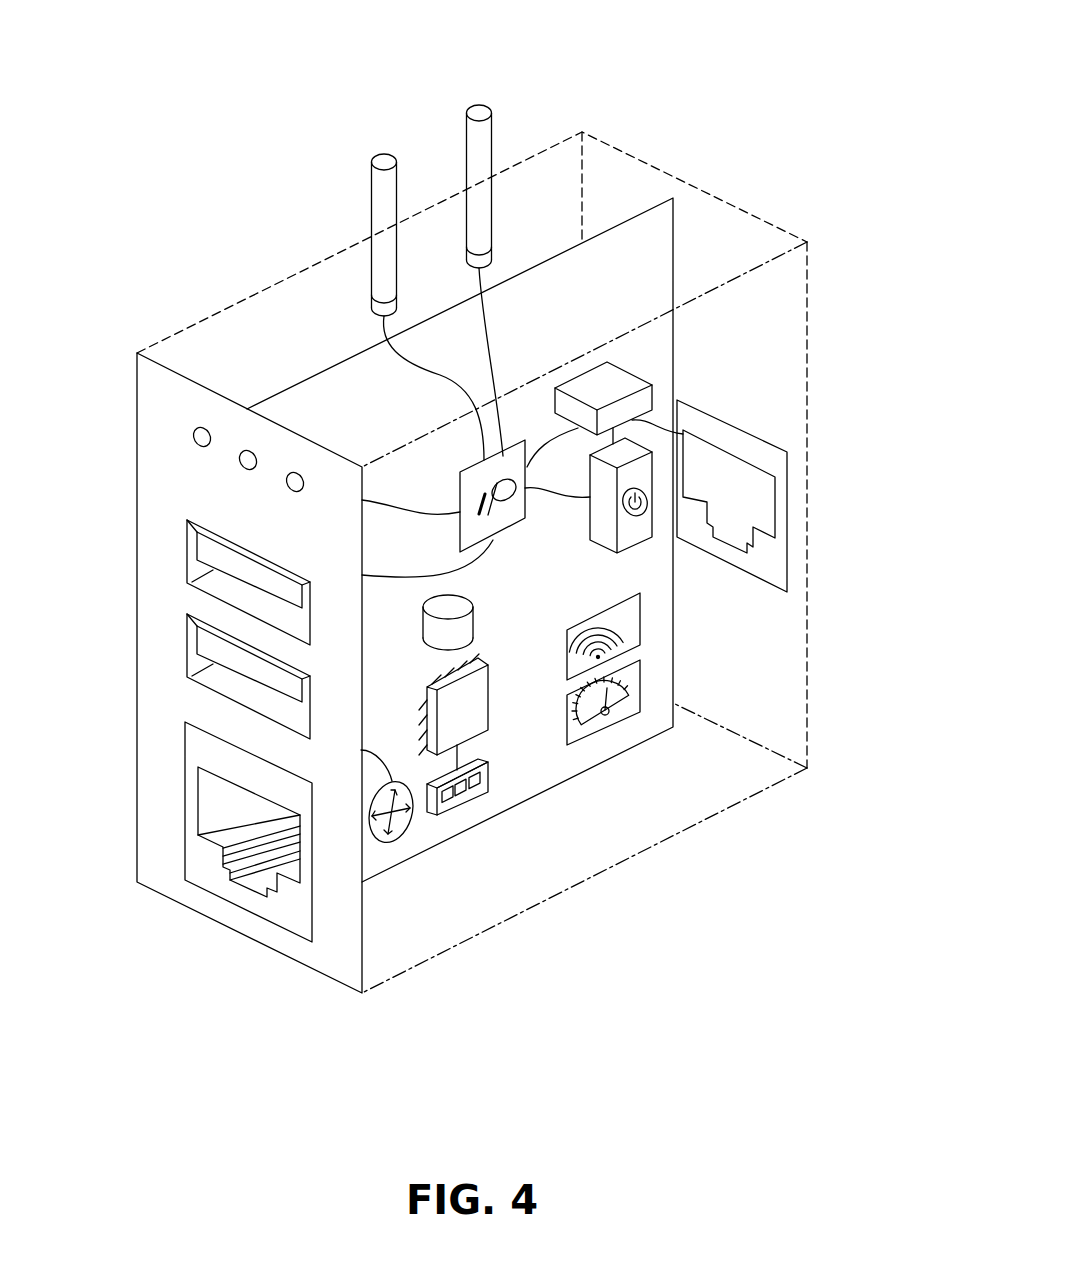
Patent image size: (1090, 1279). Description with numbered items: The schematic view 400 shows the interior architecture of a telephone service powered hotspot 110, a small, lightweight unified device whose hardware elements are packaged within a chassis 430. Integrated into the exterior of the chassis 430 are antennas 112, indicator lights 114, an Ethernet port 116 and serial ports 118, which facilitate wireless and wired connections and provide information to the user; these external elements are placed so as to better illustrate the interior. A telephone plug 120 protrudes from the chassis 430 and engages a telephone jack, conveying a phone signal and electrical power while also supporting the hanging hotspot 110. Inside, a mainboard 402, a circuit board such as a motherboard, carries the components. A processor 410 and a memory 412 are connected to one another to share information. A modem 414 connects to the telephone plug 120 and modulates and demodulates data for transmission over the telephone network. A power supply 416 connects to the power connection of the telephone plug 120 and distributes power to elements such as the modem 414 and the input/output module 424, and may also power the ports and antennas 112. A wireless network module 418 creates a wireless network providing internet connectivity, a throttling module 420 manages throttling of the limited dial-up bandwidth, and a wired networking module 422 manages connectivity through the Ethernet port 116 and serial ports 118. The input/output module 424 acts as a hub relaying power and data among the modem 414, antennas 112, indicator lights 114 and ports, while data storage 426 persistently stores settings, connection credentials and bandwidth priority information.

The schematic view 400 is at (703, 90).
The telephone service powered hotspot 110 is at (258, 292).
The antennas 112 is at (352, 158).
The indicator lights 114 is at (183, 438).
The Ethernet port 116 is at (245, 892).
The serial ports 118 is at (180, 513).
The telephone plug 120 is at (787, 527).
The mainboard 402 is at (673, 347).
The processor 410 is at (488, 717).
The memory 412 is at (472, 800).
The modem 414 is at (630, 375).
The power supply 416 is at (606, 548).
The wireless network module 418 is at (641, 620).
The throttling module 420 is at (641, 683).
The wired networking module 422 is at (412, 823).
The input/output module 424 is at (514, 447).
The data storage 426 is at (476, 620).
The chassis 430 is at (740, 208).